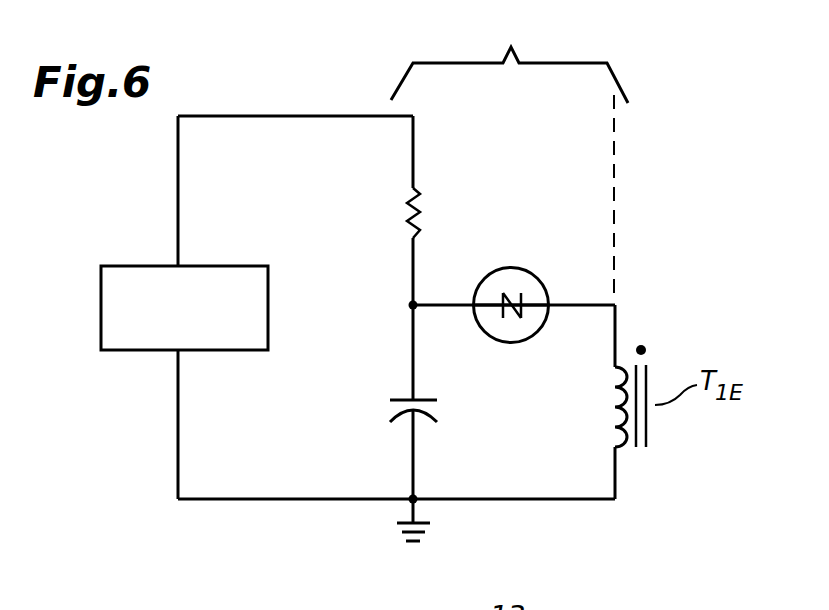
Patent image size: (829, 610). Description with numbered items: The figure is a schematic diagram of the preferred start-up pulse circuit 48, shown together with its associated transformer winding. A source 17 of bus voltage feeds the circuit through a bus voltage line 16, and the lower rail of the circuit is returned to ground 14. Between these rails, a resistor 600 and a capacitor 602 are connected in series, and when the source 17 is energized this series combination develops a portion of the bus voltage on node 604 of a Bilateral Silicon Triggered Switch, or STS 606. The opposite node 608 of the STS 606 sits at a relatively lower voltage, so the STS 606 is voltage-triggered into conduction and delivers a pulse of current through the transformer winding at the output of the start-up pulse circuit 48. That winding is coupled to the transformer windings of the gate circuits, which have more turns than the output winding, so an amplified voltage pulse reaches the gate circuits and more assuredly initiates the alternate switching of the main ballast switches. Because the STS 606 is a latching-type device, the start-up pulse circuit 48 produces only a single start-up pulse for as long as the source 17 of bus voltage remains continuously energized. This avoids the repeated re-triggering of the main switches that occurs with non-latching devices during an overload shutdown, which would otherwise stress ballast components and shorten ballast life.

The ground 14 is at (407, 513).
The bus voltage line VB 16 is at (282, 115).
The source of bus voltage 17 is at (104, 265).
The start-up pulse circuit 48 is at (509, 155).
The resistor 600 is at (408, 214).
The capacitor 602 is at (392, 407).
The node 604 is at (446, 304).
The Bilateral Silicon Triggered Switch (STS) 606 is at (520, 343).
The node 608 is at (566, 304).